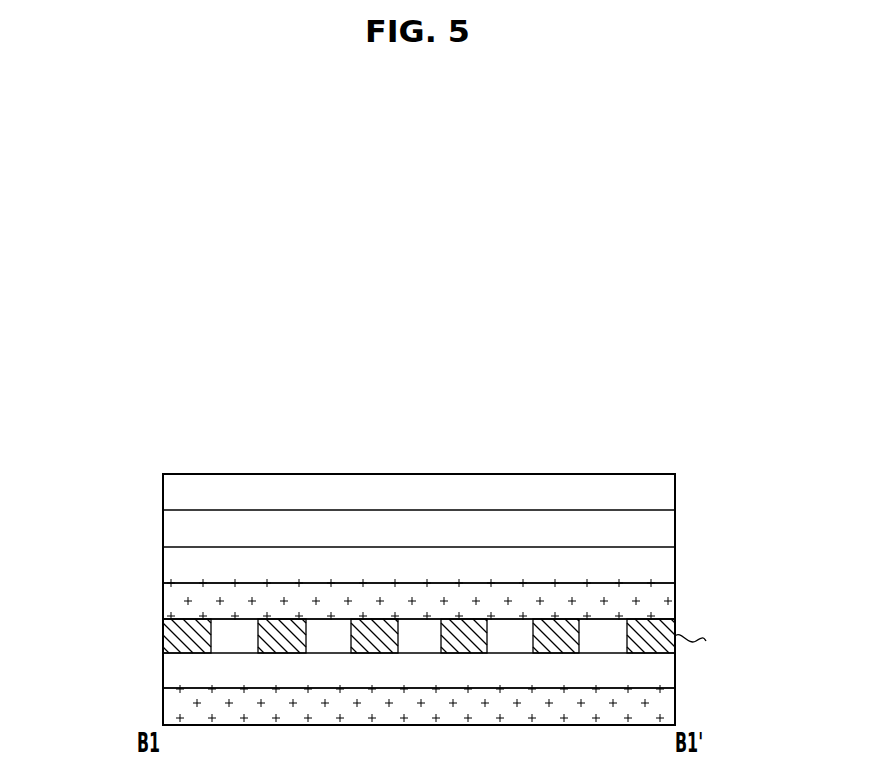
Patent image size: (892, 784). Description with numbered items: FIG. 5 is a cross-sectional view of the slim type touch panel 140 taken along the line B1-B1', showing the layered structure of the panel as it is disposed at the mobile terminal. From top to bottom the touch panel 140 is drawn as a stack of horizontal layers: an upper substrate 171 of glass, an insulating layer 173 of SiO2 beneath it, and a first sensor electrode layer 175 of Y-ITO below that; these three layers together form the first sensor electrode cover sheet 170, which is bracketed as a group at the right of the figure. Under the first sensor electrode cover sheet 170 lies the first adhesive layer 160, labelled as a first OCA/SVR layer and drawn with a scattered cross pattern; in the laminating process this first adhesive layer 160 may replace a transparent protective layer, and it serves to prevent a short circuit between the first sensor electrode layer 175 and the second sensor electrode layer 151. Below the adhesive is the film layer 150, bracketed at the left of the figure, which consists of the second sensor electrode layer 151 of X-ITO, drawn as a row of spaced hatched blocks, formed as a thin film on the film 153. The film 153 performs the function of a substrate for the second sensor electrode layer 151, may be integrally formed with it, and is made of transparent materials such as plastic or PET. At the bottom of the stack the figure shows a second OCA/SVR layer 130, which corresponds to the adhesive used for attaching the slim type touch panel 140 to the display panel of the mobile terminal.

The slim type touch panel 140 is at (733, 418).
The first sensor electrode cover sheet 170 is at (757, 487).
The upper substrate 171 is at (675, 492).
The insulating layer 173 is at (675, 529).
The first sensor electrode layer 175 is at (675, 566).
The first adhesive layer 160 is at (675, 603).
The film layer 150 is at (85, 630).
The second sensor electrode layer 151 is at (163, 636).
The film 153 is at (163, 680).
The second OCA/SVR adhesive layer 130 is at (675, 713).